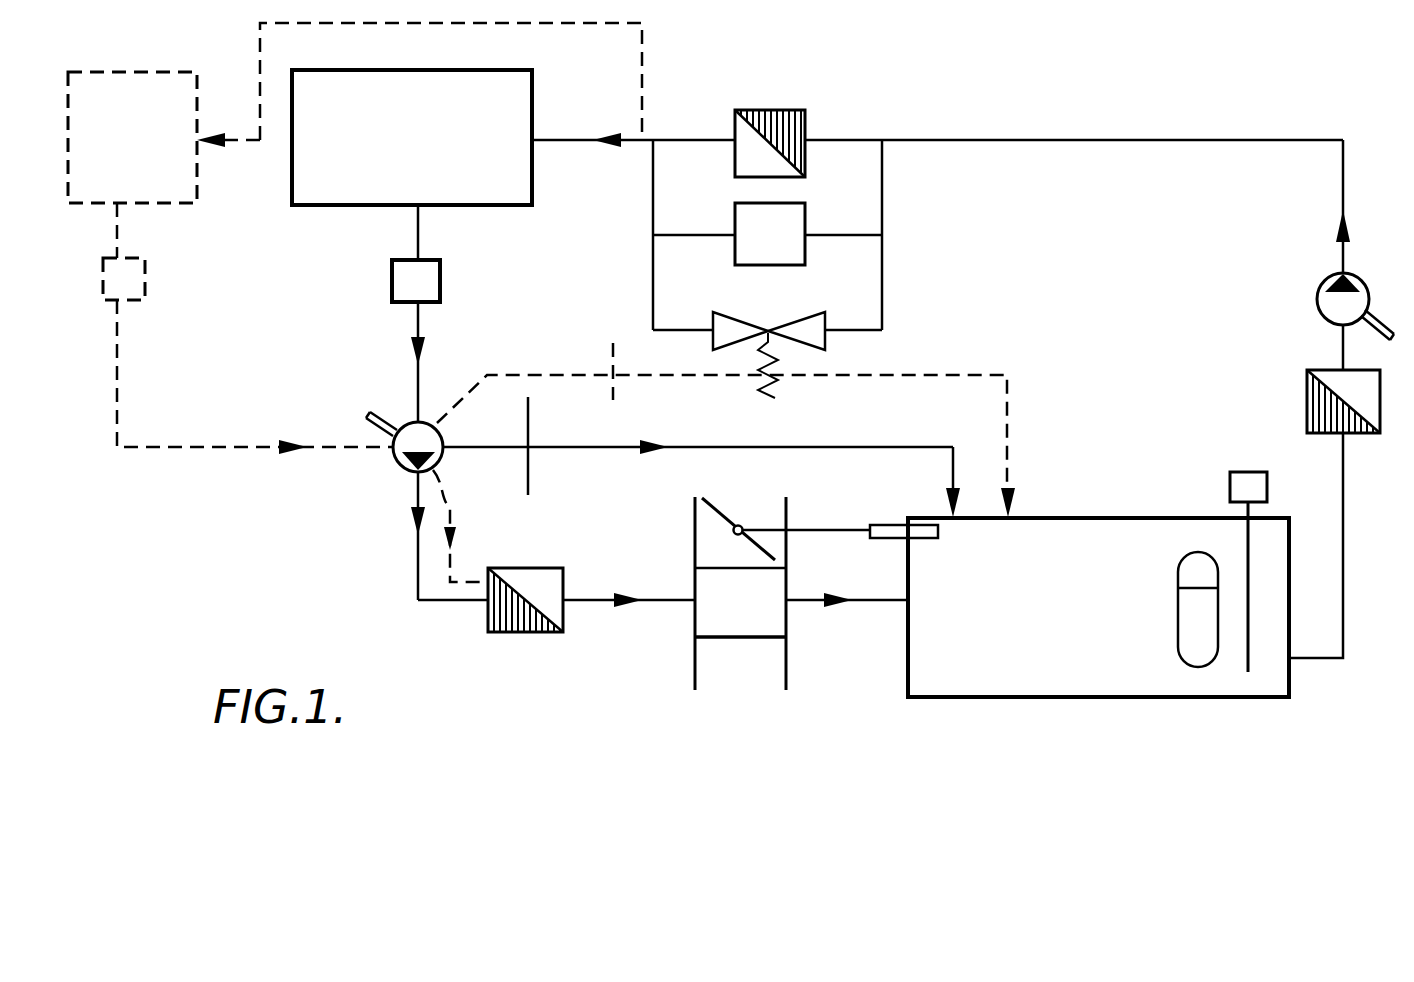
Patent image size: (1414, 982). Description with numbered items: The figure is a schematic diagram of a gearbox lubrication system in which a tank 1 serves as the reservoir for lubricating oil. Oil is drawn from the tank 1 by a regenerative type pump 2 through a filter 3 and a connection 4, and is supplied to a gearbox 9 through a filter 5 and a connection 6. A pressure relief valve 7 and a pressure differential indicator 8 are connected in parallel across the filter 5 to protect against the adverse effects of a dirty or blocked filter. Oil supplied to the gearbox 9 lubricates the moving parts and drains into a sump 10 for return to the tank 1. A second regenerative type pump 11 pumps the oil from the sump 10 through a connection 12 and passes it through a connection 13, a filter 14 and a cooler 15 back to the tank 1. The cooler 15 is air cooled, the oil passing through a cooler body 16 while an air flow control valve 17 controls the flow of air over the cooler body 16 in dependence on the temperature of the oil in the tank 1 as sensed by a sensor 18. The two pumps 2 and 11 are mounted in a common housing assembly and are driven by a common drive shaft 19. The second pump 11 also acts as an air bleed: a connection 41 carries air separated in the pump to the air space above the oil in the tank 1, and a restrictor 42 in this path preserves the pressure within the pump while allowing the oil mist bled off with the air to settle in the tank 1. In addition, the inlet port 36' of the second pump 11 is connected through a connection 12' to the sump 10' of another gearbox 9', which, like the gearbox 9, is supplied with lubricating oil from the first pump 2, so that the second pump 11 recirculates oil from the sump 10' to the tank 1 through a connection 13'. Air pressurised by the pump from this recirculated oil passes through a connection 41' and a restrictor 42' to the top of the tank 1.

The tank 1 is at (1203, 698).
The regenerative type pump 2 is at (1365, 265).
The filter 3 is at (1305, 420).
The connection 4 is at (1340, 632).
The filter 5 is at (757, 112).
The connection 6 is at (990, 140).
The pressure relief valve 7 is at (805, 348).
The pressure differential indicator 8 is at (733, 218).
The gearbox 9 is at (435, 129).
The another gearbox 9' is at (132, 137).
The sump 10 is at (448, 268).
The sump 10' is at (159, 251).
The second regenerative type pump 11 is at (398, 482).
The connection 12 is at (371, 362).
The connection 12' is at (255, 377).
The connection 13 is at (409, 537).
The connection 13' is at (476, 526).
The filter 14 is at (513, 632).
The cooler 15 is at (683, 640).
The cooler body 16 is at (782, 625).
The air flow control valve 17 is at (713, 515).
The sensor 18 is at (880, 538).
The common drive shaft 19 is at (380, 412).
The inlet port 36' is at (317, 487).
The connection 41 is at (701, 461).
The connection 41' is at (735, 418).
The restrictor 42 is at (559, 455).
The restrictor 42' is at (563, 357).